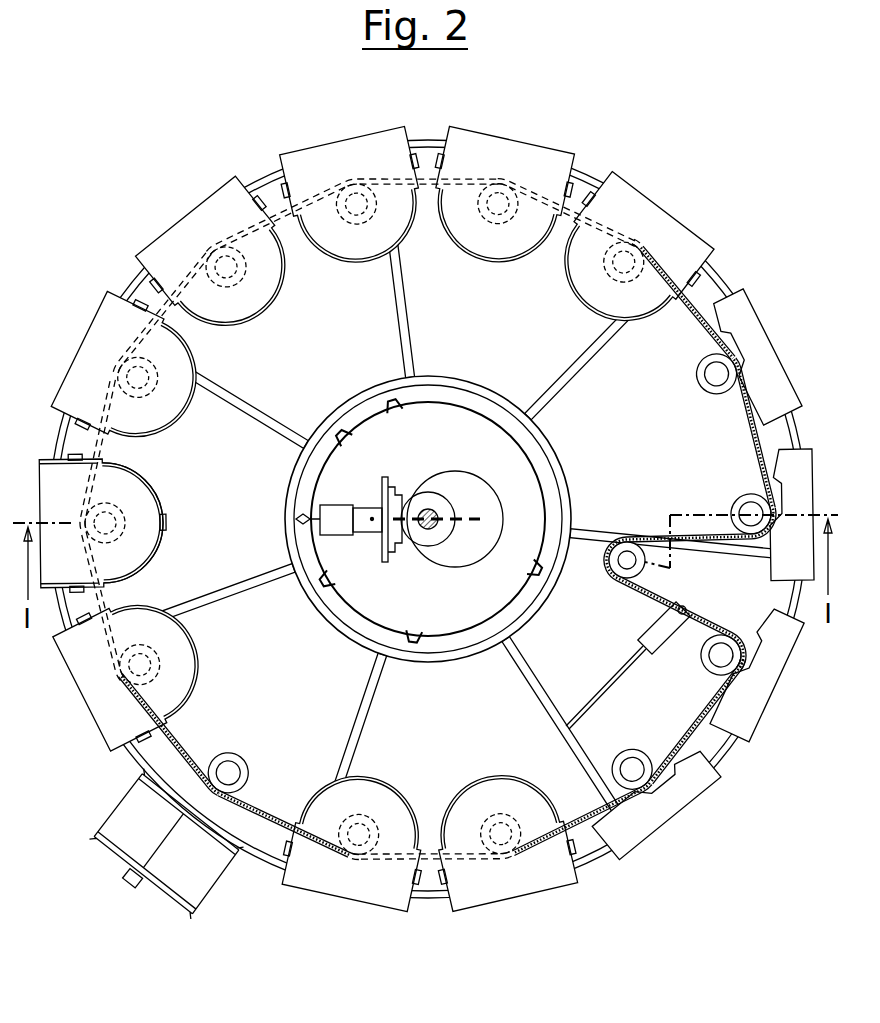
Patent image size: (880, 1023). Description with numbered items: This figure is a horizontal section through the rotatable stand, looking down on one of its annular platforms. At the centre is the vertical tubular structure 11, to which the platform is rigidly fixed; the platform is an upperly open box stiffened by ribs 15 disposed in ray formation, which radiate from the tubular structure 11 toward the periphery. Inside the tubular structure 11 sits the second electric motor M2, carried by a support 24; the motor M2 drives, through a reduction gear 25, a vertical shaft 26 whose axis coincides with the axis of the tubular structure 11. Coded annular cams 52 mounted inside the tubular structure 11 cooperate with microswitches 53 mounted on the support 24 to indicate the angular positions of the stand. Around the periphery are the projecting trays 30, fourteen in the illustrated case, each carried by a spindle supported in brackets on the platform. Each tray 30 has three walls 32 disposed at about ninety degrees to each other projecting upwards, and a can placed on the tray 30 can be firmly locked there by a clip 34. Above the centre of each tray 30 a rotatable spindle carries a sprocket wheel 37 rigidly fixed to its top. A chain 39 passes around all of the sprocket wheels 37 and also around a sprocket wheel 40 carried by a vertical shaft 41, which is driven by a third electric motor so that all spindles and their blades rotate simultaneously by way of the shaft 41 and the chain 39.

The central vertical tubular structure 11 is at (570, 452).
The ribs 15 is at (405, 300).
The support 24 is at (381, 536).
The reduction gear 25 is at (422, 540).
The vertical shaft 26 is at (424, 510).
The tray 30 is at (190, 228).
The walls 32 is at (108, 465).
The clip 34 is at (170, 547).
The sprocket wheel 37 is at (276, 306).
The chain 39 is at (706, 288).
The sprocket wheel 40 is at (624, 578).
The vertical shaft 41 is at (624, 552).
The coded annular cams 52 is at (474, 393).
The microswitches 53 is at (333, 515).
The second electric motor M2 is at (470, 486).